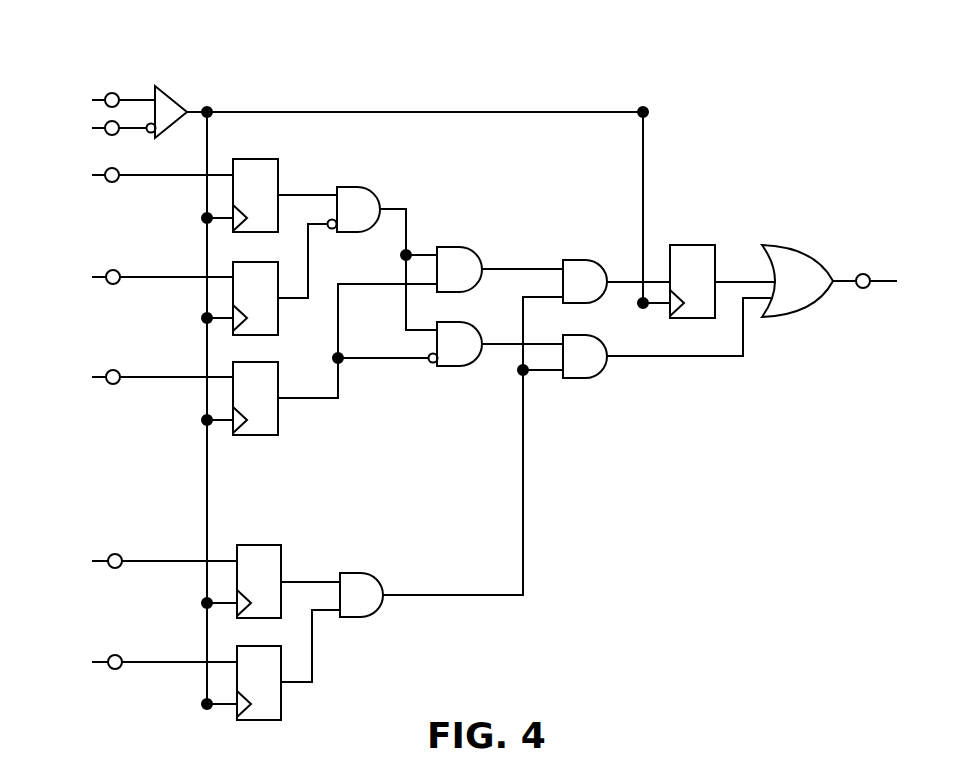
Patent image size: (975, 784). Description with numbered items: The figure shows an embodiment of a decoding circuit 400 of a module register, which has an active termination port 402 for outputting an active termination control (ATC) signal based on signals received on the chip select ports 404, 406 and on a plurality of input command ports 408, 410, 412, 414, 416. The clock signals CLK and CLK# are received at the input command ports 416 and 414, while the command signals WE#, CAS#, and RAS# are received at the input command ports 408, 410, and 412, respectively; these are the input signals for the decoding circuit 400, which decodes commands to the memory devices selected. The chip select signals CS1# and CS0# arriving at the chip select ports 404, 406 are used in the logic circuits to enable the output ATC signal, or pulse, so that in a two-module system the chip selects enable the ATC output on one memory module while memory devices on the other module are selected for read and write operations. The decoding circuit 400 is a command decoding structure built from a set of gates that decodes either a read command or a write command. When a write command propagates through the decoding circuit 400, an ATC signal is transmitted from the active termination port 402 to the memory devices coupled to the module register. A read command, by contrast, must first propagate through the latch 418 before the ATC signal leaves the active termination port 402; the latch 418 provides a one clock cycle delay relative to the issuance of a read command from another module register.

The decoding circuit 400 is at (780, 83).
The active termination port 402 is at (864, 274).
The chip select port 404 is at (116, 655).
The chip select port 406 is at (116, 554).
The input command port 408 is at (113, 370).
The input command port 410 is at (113, 270).
The input command port 412 is at (116, 182).
The input command port 414 is at (116, 135).
The input command port 416 is at (111, 91).
The latch 418 is at (695, 245).